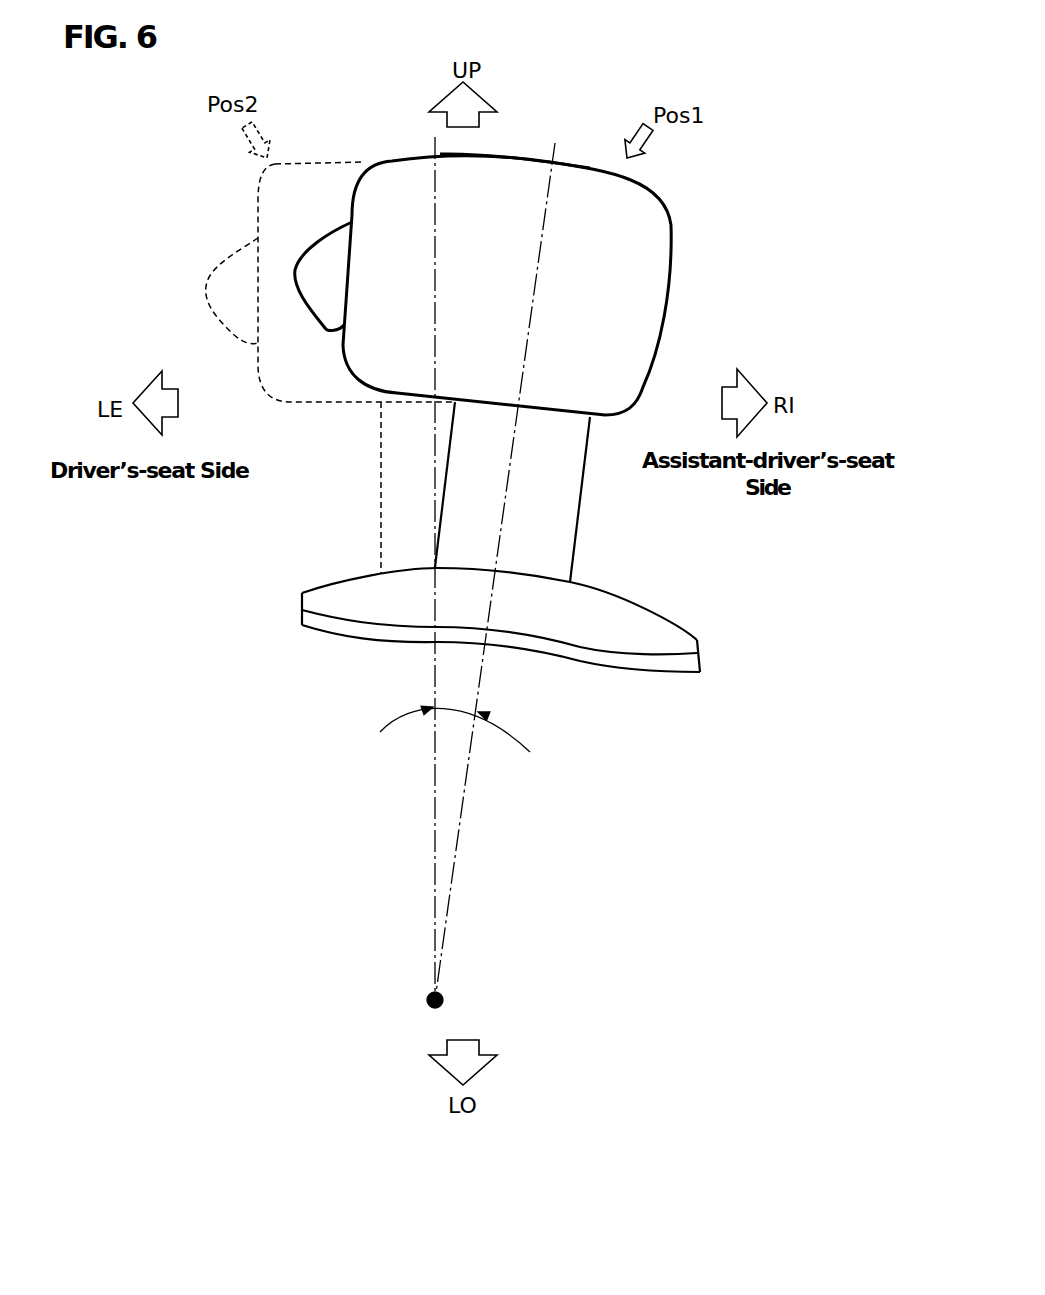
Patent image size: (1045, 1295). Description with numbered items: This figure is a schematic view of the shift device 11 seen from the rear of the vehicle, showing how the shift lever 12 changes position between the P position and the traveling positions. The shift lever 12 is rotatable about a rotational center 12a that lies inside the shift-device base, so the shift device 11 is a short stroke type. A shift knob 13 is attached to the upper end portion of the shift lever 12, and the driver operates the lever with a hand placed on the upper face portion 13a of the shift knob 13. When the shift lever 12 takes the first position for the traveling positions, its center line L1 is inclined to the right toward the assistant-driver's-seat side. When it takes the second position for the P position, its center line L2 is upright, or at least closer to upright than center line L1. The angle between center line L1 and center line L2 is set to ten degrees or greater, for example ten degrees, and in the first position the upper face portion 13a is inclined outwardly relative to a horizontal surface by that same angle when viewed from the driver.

The shift device 11 is at (557, 75).
The shift lever 12 is at (545, 527).
The rotational center 12a is at (448, 993).
The shift knob 13 is at (650, 232).
The upper face portion 13a is at (577, 167).
The center line L1 is at (545, 285).
The center line L2 is at (435, 293).